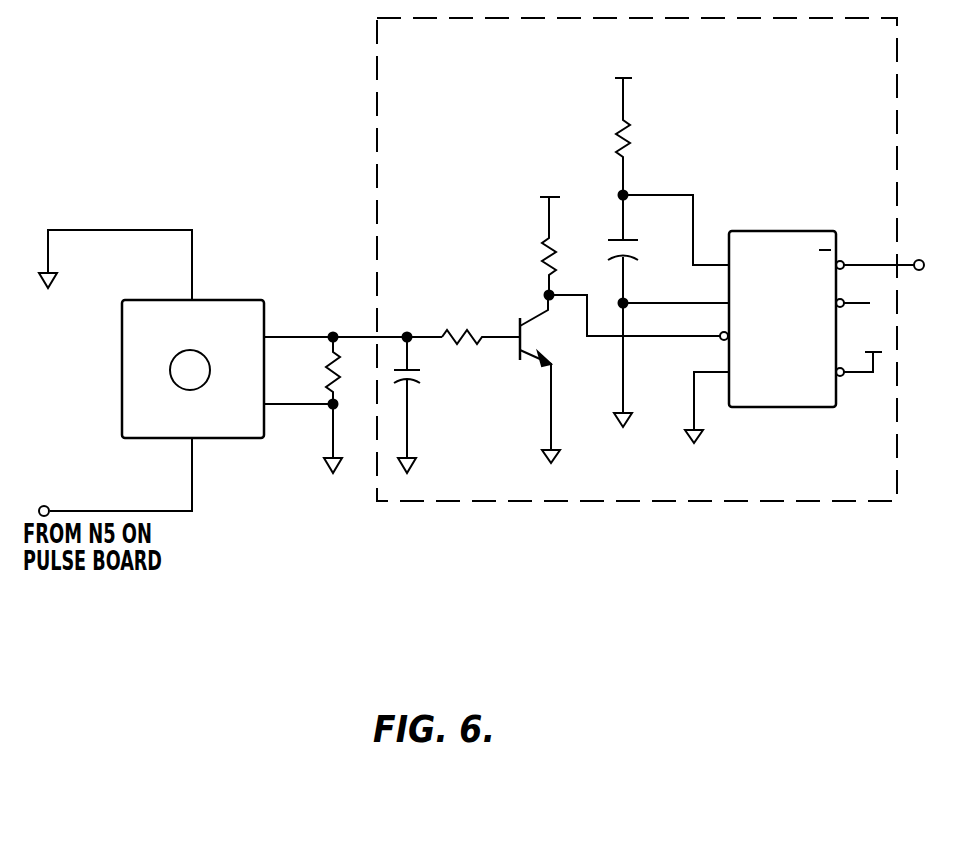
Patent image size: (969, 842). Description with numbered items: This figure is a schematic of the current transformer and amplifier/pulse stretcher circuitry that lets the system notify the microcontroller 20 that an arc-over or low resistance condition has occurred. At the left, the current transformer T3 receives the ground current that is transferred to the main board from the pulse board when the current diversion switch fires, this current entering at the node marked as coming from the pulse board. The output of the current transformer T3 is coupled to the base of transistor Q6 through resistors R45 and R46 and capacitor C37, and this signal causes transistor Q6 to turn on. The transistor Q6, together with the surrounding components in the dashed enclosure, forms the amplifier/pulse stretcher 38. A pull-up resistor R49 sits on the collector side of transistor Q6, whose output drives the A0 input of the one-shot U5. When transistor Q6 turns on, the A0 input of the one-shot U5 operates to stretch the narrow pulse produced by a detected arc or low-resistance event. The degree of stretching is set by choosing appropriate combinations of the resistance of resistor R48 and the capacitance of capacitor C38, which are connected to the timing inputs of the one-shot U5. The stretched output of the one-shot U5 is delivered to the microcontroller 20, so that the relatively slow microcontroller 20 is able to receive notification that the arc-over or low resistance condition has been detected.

The microcontroller 20 is at (918, 252).
The amplifier/pulse stretcher 38 is at (816, 508).
The current transformer T3 is at (151, 373).
The resistor R45 is at (315, 403).
The capacitor C37 is at (427, 403).
The resistor R46 is at (481, 322).
The transistor Q6 is at (542, 379).
The resistor R49 is at (535, 232).
The resistor R48 is at (636, 124).
The capacitor C38 is at (644, 311).
The one-shot U5 is at (808, 304).